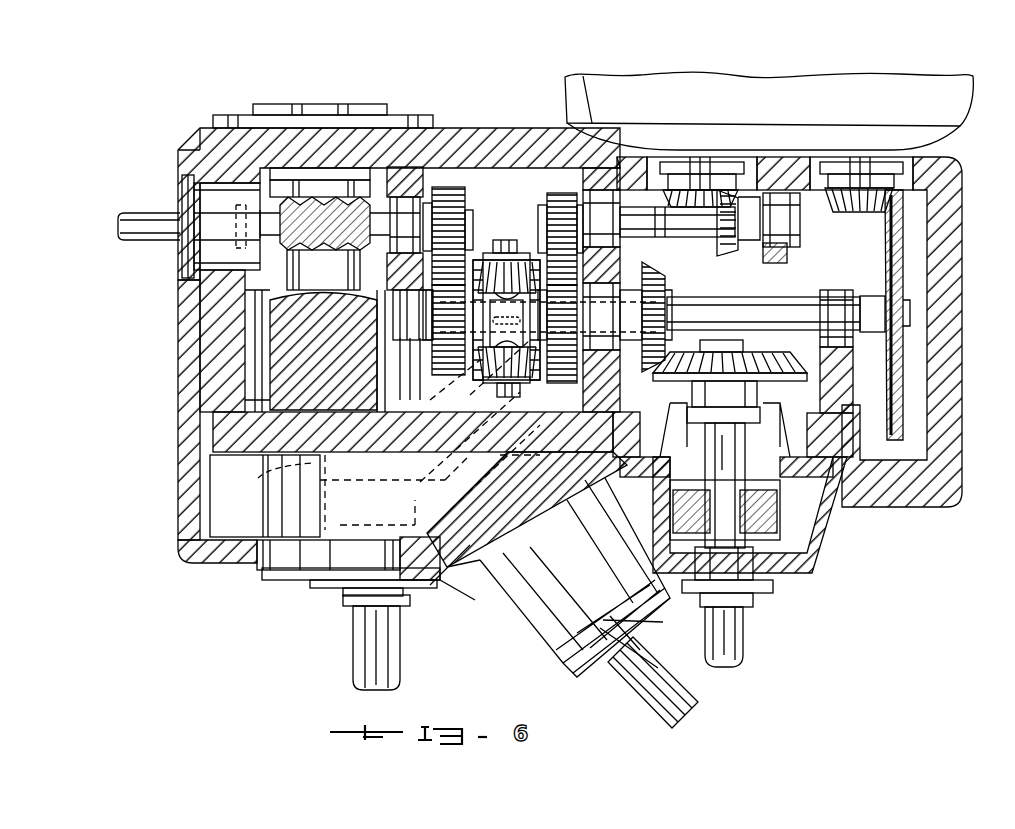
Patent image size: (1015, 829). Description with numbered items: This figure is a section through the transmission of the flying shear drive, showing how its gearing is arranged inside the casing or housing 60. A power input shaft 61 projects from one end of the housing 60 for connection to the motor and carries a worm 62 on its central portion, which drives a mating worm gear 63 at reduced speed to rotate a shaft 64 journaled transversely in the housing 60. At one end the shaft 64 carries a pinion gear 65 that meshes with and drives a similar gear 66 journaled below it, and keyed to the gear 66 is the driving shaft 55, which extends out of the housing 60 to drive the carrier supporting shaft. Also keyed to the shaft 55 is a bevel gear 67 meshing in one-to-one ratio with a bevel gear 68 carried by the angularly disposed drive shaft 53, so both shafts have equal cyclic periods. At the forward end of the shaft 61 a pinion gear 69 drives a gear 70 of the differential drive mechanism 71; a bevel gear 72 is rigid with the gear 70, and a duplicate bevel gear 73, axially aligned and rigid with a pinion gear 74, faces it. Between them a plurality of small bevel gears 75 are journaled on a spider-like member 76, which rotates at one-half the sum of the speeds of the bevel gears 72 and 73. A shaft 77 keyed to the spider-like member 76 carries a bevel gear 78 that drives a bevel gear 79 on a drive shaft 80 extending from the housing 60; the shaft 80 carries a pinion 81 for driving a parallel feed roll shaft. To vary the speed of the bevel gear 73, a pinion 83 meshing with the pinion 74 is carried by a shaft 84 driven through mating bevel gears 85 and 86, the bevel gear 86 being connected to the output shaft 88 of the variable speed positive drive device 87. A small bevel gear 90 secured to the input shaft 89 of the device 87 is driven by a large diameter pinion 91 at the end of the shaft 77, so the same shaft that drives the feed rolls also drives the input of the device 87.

The drive shaft 53 is at (648, 690).
The driving shaft 55 is at (365, 630).
The housing 60 is at (178, 373).
The shaft 61 is at (140, 240).
The worm 62 is at (280, 203).
The worm gear 63 is at (245, 245).
The shaft 64 is at (308, 280).
The pinion gear 65 is at (272, 322).
The gear 66 is at (395, 300).
The bevel gear 67 is at (258, 477).
The bevel gear 68 is at (450, 498).
The pinion gear 69 is at (448, 188).
The gear 70 is at (462, 375).
The differential drive mechanism 71 is at (507, 228).
The bevel gear 72 is at (463, 275).
The bevel gear 73 is at (545, 368).
The pinion gear 74 is at (565, 378).
The small bevel gears 75 is at (517, 263).
The spider-like member 76 is at (604, 388).
The shaft 77 is at (728, 302).
The bevel gear 78 is at (660, 274).
The bevel gear 79 is at (775, 343).
The drive shaft 80 is at (746, 655).
The pinion 81 is at (764, 526).
The pinion 83 is at (560, 193).
The shaft 84 is at (648, 229).
The bevel gear 85 is at (728, 250).
The bevel gear 86 is at (722, 190).
The variable speed positive drive device 87 is at (833, 88).
The output shaft 88 is at (703, 150).
The input shaft 89 is at (862, 152).
The bevel gear 90 is at (862, 200).
The pinion 91 is at (885, 250).